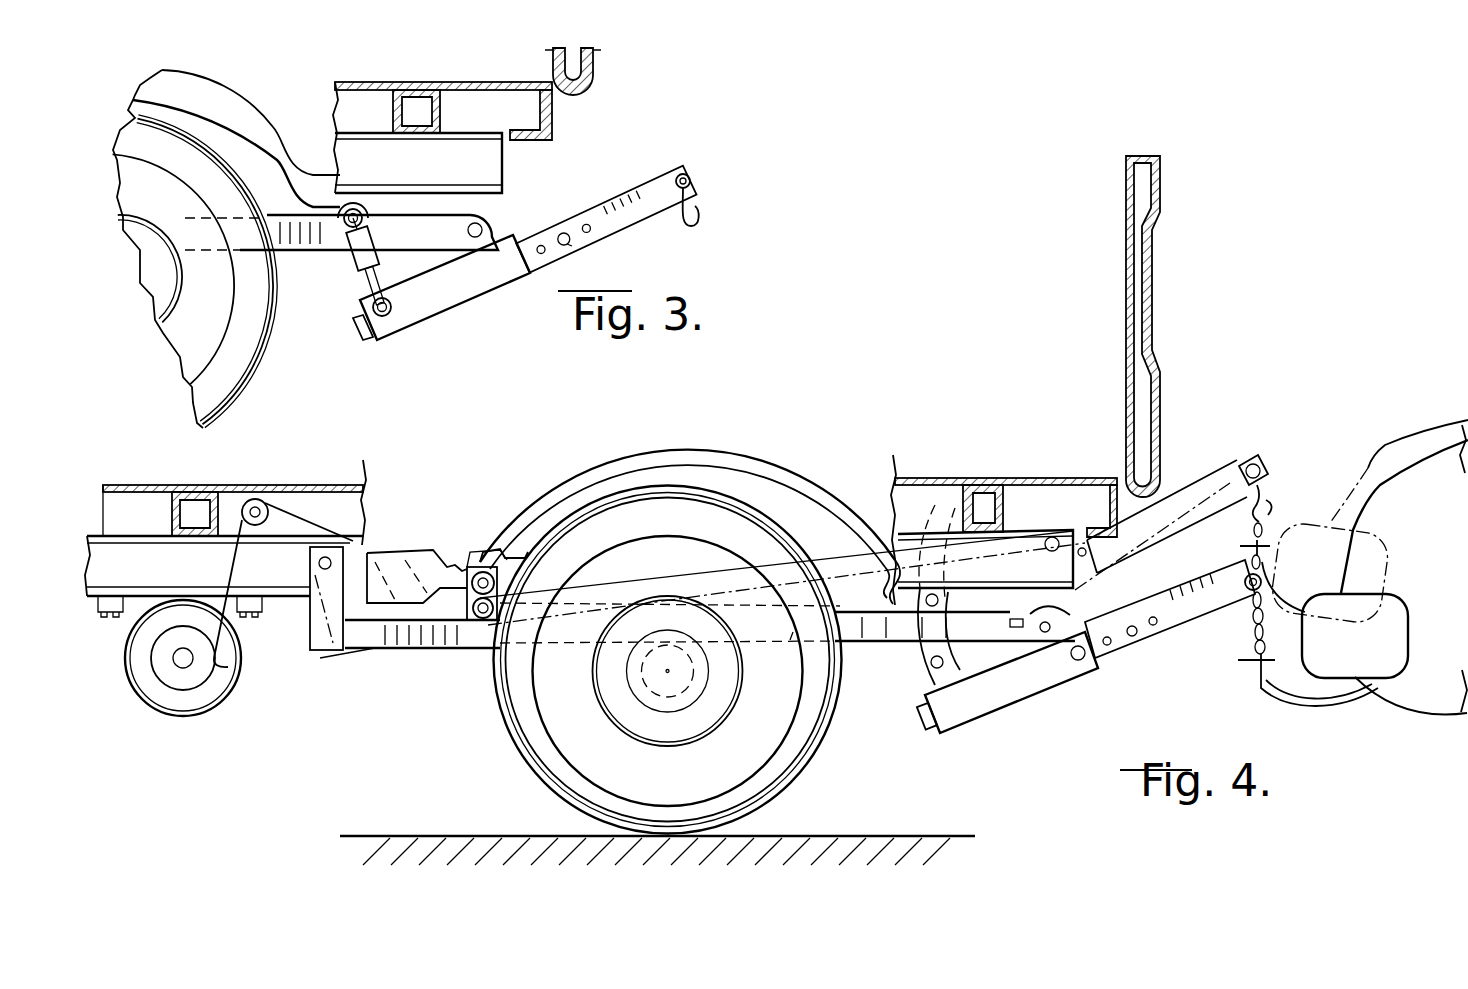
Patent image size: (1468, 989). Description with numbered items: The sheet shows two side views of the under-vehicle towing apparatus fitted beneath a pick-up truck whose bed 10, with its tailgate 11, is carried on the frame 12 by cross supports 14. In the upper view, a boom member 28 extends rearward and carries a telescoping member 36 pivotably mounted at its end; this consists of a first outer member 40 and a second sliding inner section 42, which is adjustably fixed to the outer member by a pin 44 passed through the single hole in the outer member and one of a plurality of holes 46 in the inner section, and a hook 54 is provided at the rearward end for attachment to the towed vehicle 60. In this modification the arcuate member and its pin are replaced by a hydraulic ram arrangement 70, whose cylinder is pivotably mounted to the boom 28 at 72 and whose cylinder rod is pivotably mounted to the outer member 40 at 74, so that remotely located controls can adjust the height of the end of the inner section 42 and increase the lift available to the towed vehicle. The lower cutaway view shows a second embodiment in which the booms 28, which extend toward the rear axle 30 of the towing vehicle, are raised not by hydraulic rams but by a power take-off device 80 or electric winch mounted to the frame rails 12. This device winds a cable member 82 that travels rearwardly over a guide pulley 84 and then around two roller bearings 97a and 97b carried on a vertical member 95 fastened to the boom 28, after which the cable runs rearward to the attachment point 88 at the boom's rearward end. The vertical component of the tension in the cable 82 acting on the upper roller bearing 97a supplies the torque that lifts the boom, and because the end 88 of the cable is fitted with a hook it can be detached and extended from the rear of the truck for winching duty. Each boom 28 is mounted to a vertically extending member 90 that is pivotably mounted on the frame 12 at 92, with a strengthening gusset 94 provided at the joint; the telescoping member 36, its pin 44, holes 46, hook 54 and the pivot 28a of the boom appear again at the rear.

In FIG. 3, the bed 10 is at (322, 143).
In FIG. 4, the bed 10 is at (812, 472).
In FIG. 3, the tailgate 11 is at (597, 70).
In FIG. 4, the tailgate 11 is at (1150, 294).
In FIG. 3, the frame 12 is at (495, 166).
In FIG. 4, the frame 12 is at (128, 560).
In FIG. 3, the cross supports 14 is at (441, 111).
In FIG. 4, the cross supports 14 is at (222, 490).
In FIG. 3, the boom member 28 is at (419, 234).
In FIG. 4, the boom member 28 is at (470, 652).
In FIG. 4, the drawbar pivot 28a is at (790, 640).
In FIG. 4, the rear axle 30 is at (640, 690).
In FIG. 4, the telescoping member 36 is at (1016, 702).
In FIG. 3, the first outer member 40 is at (453, 300).
In FIG. 4, the first outer member 40 is at (975, 705).
In FIG. 3, the second sliding inner section 42 is at (607, 200).
In FIG. 4, the second sliding inner section 42 is at (1173, 631).
In FIG. 4, the pin 44 is at (1080, 661).
In FIG. 4, the holes 46 is at (1133, 637).
In FIG. 3, the hook 54 is at (706, 214).
In FIG. 4, the hook 54 is at (1250, 630).
In FIG. 4, the towed vehicle 60 is at (1302, 547).
In FIG. 3, the hydraulic ram arrangement 70 is at (357, 259).
In FIG. 3, the pivot mounting of ram cylinder to boom 72 is at (345, 224).
In FIG. 3, the pivot mounting of cylinder rod to outer telescopic member 74 is at (368, 301).
In FIG. 4, the power take-off device 80 is at (200, 700).
In FIG. 4, the cable member 82 is at (340, 519).
In FIG. 4, the guide pulley 84 is at (264, 501).
In FIG. 4, the attachment point 88 is at (1071, 572).
In FIG. 4, the vertically extending member 90 is at (312, 626).
In FIG. 4, the pivot mounting of vertical member on frame 92 is at (368, 553).
In FIG. 4, the strengthening gusset 94 is at (400, 612).
In FIG. 4, the vertical member 95 is at (504, 602).
In FIG. 4, the upper roller bearing 97a is at (477, 572).
In FIG. 4, the lower roller bearing 97b is at (492, 614).